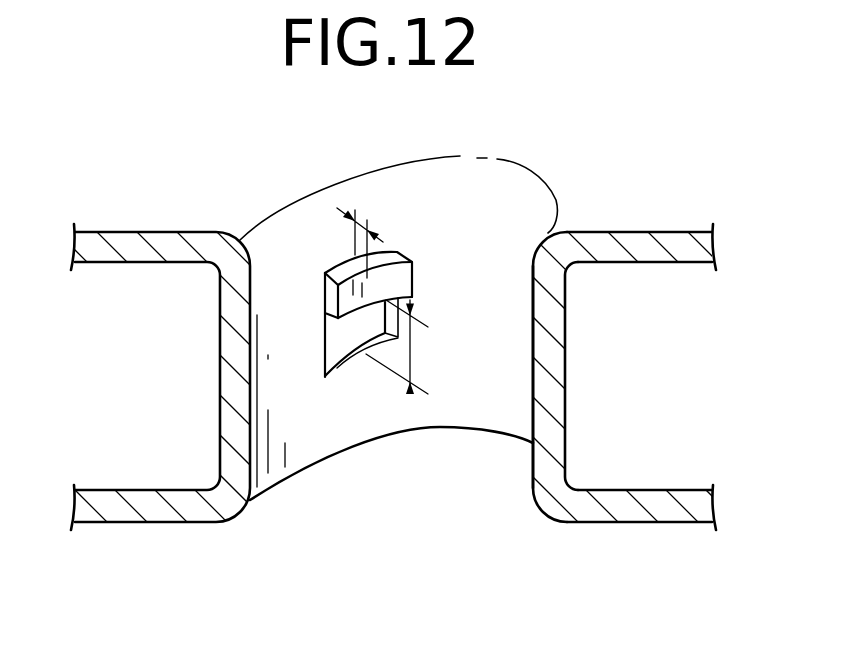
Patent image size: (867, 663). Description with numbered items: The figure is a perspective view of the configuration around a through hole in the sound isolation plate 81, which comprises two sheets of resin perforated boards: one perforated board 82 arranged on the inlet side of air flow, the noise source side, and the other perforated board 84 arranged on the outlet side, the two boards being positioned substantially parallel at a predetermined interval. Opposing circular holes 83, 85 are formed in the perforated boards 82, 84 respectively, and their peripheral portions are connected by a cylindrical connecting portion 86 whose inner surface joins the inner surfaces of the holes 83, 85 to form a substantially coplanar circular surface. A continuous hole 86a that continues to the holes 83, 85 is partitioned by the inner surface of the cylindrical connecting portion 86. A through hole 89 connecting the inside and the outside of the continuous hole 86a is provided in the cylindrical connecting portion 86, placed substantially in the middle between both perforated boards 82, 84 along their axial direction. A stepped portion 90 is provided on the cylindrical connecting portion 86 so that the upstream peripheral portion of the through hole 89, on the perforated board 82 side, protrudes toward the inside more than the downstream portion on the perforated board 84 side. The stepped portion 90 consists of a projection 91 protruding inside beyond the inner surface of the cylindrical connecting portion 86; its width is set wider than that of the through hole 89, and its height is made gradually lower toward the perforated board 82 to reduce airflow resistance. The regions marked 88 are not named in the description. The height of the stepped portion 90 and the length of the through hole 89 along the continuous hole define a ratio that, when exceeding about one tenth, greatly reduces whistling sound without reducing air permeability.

The sound isolation plate 81 is at (620, 200).
The perforated board 82 is at (690, 232).
The hole 83 is at (530, 163).
The perforated board 84 is at (667, 522).
The hole 85 is at (332, 453).
The cylindrical connecting portion 86 is at (566, 440).
The continuous hole 86a is at (527, 354).
The hollow space 88 is at (121, 397).
The through hole 89 is at (347, 346).
The stepped portion 90 is at (333, 334).
The projection 91 is at (413, 278).